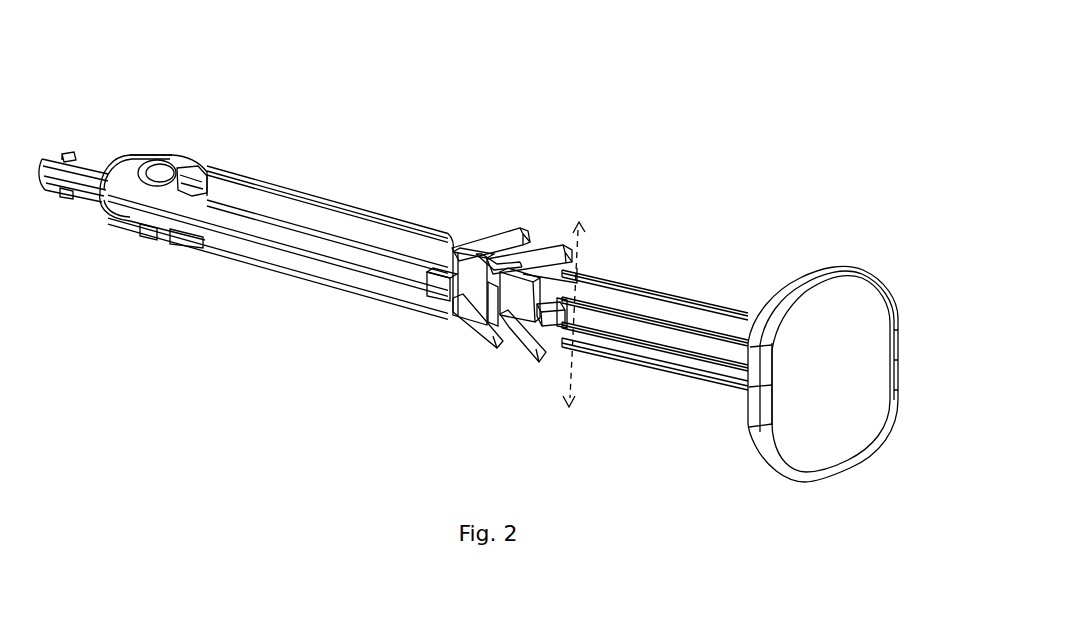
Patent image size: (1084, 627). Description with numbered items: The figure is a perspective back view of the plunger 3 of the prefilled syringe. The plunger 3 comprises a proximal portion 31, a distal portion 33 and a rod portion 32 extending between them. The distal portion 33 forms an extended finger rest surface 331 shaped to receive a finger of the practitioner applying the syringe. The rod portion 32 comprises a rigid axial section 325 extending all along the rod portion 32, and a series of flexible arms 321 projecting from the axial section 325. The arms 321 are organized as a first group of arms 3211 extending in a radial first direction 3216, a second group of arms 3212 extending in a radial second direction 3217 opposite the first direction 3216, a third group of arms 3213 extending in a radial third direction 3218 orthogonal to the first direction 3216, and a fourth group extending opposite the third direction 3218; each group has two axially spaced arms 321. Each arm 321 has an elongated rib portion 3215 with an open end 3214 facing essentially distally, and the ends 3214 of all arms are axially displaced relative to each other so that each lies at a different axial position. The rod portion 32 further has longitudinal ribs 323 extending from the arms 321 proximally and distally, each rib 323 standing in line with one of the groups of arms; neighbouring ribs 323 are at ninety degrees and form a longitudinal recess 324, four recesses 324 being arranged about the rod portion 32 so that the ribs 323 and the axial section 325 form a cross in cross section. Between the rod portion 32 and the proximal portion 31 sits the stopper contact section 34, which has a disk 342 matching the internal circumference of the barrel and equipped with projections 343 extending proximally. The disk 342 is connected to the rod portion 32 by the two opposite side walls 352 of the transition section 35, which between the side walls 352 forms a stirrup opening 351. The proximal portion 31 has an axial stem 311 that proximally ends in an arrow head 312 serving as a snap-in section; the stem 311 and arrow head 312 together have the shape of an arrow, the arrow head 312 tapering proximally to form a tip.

The plunger 3 is at (705, 215).
The proximal portion 31 is at (70, 142).
The axial stem 311 is at (78, 185).
The arrow head 312 is at (57, 199).
The rod portion 32 is at (354, 192).
The flexible arms 321 is at (562, 227).
The first group of arms 3211 is at (500, 231).
The second group of arms 3212 is at (462, 342).
The third group of arms 3213 is at (445, 288).
The open end 3214 is at (490, 362).
The elongated rib portion 3215 is at (515, 352).
The first direction 3216 is at (588, 248).
The second direction 3217 is at (568, 378).
The third direction 3218 is at (573, 315).
The longitudinal ribs 323 is at (735, 318).
The longitudinal recess 324 is at (243, 258).
The axial section 325 is at (270, 217).
The distal portion 33 is at (850, 248).
The finger rest surface 331 is at (873, 303).
The stopper contact section 34 is at (150, 142).
The disk 342 is at (127, 222).
The projections 343 is at (130, 153).
The transition section 35 is at (185, 158).
The stirrup opening 351 is at (160, 170).
The side walls 352 is at (145, 226).